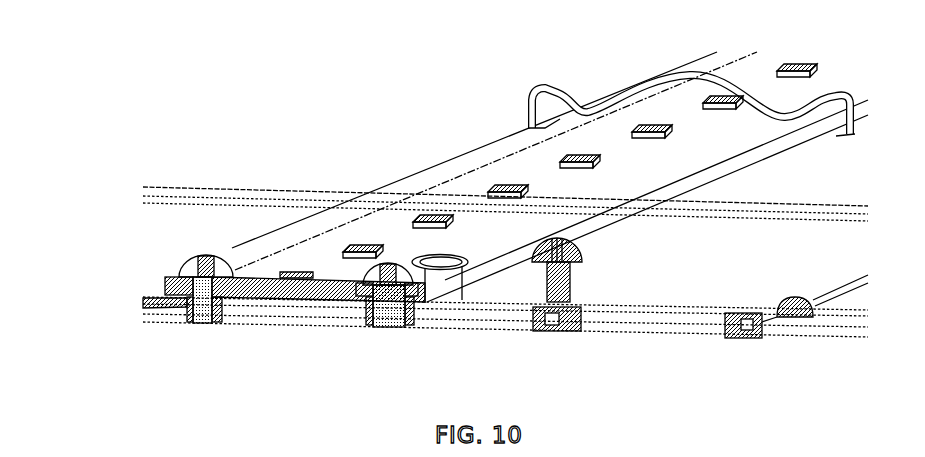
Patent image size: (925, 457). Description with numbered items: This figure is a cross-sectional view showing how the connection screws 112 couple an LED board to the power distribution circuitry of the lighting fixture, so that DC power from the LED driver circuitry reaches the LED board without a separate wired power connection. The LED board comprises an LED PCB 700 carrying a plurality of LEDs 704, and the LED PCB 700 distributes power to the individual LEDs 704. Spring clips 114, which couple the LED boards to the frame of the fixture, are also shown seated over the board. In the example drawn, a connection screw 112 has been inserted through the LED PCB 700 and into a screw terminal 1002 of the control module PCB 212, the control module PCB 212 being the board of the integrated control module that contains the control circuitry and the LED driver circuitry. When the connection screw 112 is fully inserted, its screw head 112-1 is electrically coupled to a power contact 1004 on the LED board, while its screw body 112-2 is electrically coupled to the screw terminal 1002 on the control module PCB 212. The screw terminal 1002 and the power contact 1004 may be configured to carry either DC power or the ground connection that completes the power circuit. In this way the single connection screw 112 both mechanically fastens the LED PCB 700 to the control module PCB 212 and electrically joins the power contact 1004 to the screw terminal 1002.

The spring clips 114 is at (563, 98).
The LEDs 704 is at (498, 190).
The LED PCB 700 is at (262, 268).
The screw terminal 1002 is at (193, 308).
The control module PCB 212 is at (243, 323).
The power contact 1004 is at (232, 270).
The connection screw 112 is at (162, 281).
The screw head 112-1 is at (192, 270).
The screw body 112-2 is at (200, 305).